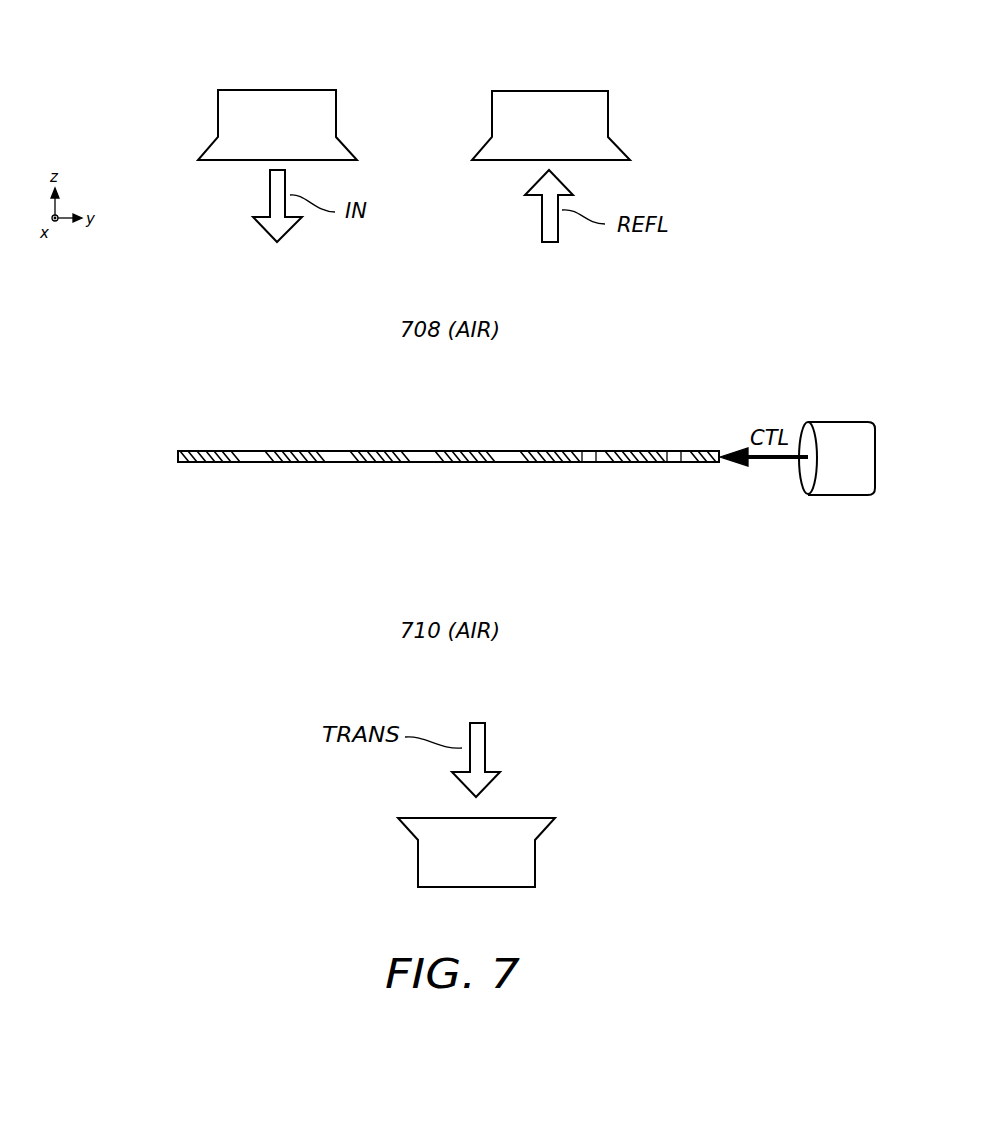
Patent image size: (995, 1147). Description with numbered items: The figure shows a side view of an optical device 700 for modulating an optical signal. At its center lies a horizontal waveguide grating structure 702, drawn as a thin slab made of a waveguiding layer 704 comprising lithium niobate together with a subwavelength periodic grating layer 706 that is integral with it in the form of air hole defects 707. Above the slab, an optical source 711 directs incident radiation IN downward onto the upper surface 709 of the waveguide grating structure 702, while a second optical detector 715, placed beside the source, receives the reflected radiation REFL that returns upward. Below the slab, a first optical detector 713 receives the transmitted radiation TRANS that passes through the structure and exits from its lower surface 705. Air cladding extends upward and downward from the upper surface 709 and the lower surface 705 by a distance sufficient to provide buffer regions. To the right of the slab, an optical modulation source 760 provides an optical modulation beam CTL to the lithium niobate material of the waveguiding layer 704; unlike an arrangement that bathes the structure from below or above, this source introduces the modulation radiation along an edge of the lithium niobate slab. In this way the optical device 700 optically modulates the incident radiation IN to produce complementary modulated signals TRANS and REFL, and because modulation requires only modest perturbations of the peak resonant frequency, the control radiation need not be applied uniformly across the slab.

The optical device 700 is at (122, 55).
The horizontal waveguide grating structure 702 is at (83, 415).
The waveguiding layer 704 is at (178, 455).
The lower surface 705 is at (208, 462).
The subwavelength periodic grating layer 706 is at (400, 460).
The air hole defects 707 is at (670, 464).
The upper surface 709 is at (208, 451).
The optical source 711 is at (336, 107).
The first optical detector 713 is at (418, 862).
The second optical detector 715 is at (608, 110).
The optical modulation source 760 is at (835, 496).